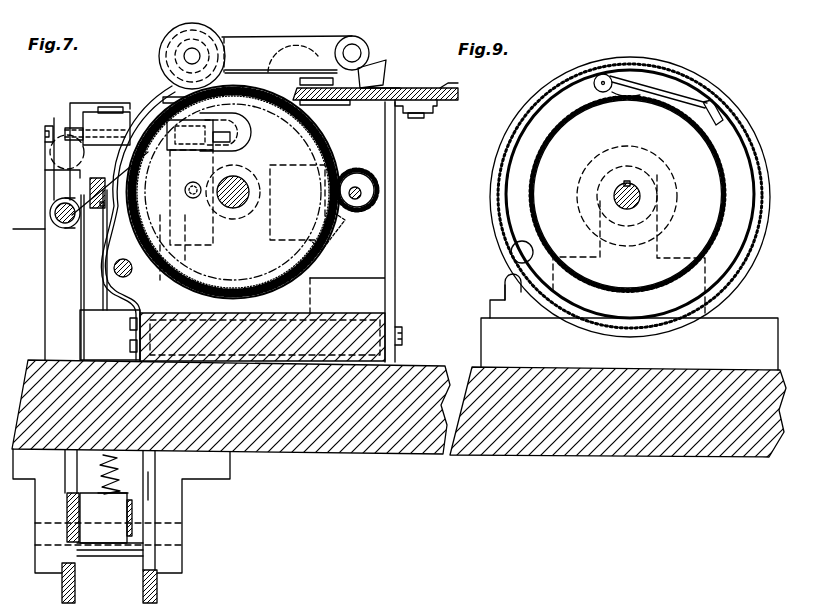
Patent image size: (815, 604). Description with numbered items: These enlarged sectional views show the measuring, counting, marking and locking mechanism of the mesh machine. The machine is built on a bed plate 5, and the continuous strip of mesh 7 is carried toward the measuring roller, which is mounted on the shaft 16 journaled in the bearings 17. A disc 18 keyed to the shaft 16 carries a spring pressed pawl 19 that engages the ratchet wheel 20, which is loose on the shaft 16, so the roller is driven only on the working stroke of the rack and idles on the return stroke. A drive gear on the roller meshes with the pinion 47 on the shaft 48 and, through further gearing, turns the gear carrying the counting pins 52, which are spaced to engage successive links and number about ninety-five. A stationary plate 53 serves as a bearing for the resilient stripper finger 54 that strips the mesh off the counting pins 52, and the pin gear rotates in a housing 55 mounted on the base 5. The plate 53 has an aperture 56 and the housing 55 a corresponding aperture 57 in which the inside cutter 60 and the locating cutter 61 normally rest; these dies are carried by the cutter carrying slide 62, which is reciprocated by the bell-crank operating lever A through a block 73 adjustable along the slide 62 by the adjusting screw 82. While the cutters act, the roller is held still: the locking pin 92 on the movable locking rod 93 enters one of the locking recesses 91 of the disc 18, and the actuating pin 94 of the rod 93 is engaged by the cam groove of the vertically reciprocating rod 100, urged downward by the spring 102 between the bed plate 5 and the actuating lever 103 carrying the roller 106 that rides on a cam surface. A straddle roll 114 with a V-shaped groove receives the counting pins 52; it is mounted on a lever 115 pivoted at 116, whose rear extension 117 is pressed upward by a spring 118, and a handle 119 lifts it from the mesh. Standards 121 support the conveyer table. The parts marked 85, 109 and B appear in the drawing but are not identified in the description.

In FIG. 7, the bed plate 5 is at (380, 460).
In FIG. 9, the bed plate 5 is at (517, 462).
In FIG. 7, the strip of mesh 7 is at (462, 91).
In FIG. 7, the shaft 16 is at (233, 208).
In FIG. 9, the shaft 16 is at (628, 210).
In FIG. 7, the bearings 17 is at (253, 237).
In FIG. 9, the bearings 17 is at (650, 248).
In FIG. 9, the disc 18 is at (493, 152).
In FIG. 9, the spring pressed pawl 19 is at (622, 80).
In FIG. 9, the ratchet wheel 20 is at (627, 194).
In FIG. 7, the pinion 47 is at (377, 180).
In FIG. 7, the shaft 48 is at (360, 188).
In FIG. 7, the counting pins 52 is at (338, 228).
In FIG. 7, the stationary plate 53 is at (173, 185).
In FIG. 7, the resilient stripper finger 54 is at (103, 238).
In FIG. 7, the housing 55 is at (308, 128).
In FIG. 7, the aperture 56 is at (240, 150).
In FIG. 7, the aperture 57 is at (258, 128).
In FIG. 7, the inside cutter 60 is at (160, 110).
In FIG. 7, the locating cutter 61 is at (125, 112).
In FIG. 7, the cutter carrying slide 62 is at (80, 170).
In FIG. 7, the block 73 is at (60, 126).
In FIG. 7, the adjusting screw 82 is at (50, 150).
In FIG. 7, the bracket arm 85 is at (80, 103).
In FIG. 9, the locking recesses 91 is at (489, 212).
In FIG. 9, the locking pin 92 is at (515, 279).
In FIG. 7, the locking rod 93 is at (103, 278).
In FIG. 9, the locking rod 93 is at (511, 249).
In FIG. 7, the actuating pin 94 is at (98, 271).
In FIG. 7, the vertically reciprocating rod 100 is at (118, 461).
In FIG. 7, the spring 102 is at (116, 474).
In FIG. 7, the actuating lever 103 is at (62, 548).
In FIG. 7, the roller 106 is at (108, 530).
In FIG. 7, the pulley 109 is at (55, 204).
In FIG. 7, the straddle roll 114 is at (197, 38).
In FIG. 7, the lever 115 is at (268, 50).
In FIG. 7, the pivot 116 is at (355, 54).
In FIG. 7, the rear extension 117 is at (385, 70).
In FIG. 7, the spring 118 is at (310, 53).
In FIG. 7, the handle 119 is at (243, 45).
In FIG. 7, the standards 121 is at (395, 240).
In FIG. 7, the operating lever A is at (70, 476).
In FIG. 7, the passage B is at (150, 500).